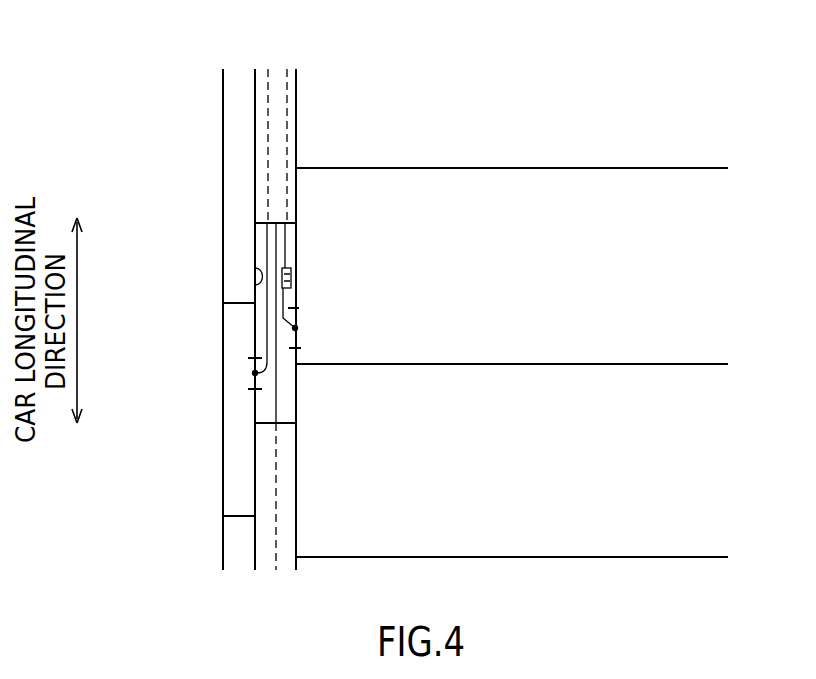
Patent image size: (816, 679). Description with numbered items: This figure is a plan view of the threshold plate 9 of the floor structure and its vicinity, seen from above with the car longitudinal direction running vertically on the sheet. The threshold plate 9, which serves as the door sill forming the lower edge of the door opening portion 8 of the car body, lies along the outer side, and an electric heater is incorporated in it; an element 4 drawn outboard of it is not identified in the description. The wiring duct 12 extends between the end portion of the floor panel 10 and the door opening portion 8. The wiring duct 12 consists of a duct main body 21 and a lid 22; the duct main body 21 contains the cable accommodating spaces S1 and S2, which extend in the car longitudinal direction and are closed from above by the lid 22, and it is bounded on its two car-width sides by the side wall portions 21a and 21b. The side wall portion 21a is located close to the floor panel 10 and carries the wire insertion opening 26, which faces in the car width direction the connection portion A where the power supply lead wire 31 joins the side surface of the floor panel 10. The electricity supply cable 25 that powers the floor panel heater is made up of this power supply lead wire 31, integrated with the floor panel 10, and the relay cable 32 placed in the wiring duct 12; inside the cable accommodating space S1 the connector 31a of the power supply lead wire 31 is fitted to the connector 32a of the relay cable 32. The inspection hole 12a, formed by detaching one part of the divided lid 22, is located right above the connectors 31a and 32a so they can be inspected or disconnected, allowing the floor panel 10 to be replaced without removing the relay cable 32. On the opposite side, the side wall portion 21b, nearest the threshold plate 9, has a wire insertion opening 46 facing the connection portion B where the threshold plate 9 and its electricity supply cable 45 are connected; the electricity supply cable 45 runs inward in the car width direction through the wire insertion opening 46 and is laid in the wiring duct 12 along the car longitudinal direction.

The side sill outer member 4 is at (223, 106).
The door opening portion 8 is at (223, 467).
The threshold plate 9 is at (233, 410).
The floor panel 10 is at (664, 352).
The wiring duct 12 is at (255, 77).
The inspection hole 12a is at (253, 268).
The duct main body 21 is at (288, 407).
The side wall portion 21a is at (296, 461).
The side wall portion 21b is at (255, 437).
The lid 22 is at (262, 156).
The electricity supply cable 25 is at (294, 93).
The wire insertion opening 26 is at (294, 345).
The power supply lead wire 31 is at (292, 295).
The connector 31a is at (292, 282).
The relay cable 32 is at (290, 118).
The connector 32a is at (292, 270).
The electricity supply cable 45 is at (265, 185).
The wire insertion opening 46 is at (252, 366).
The connection portion A is at (300, 327).
The connection portion B is at (252, 373).
The cable accommodating space S1 is at (283, 498).
The cable accommodating space S2 is at (262, 489).